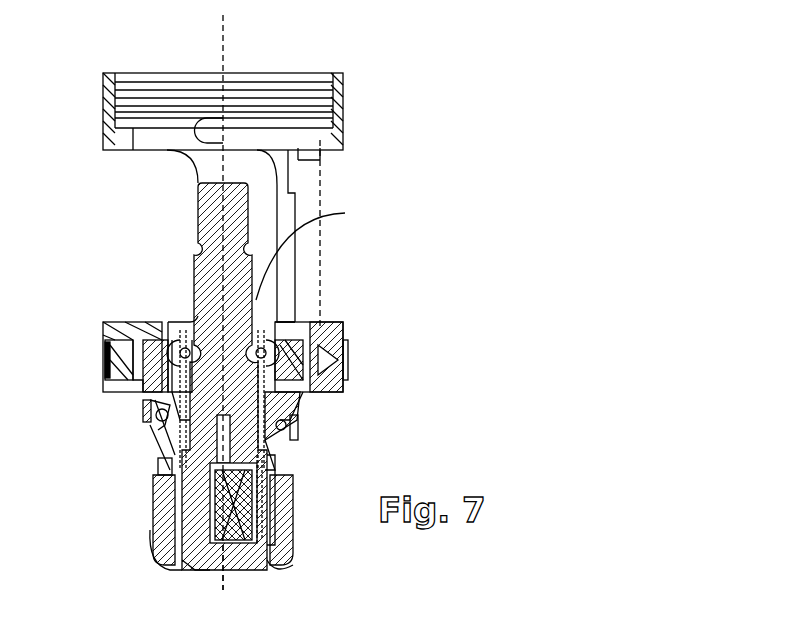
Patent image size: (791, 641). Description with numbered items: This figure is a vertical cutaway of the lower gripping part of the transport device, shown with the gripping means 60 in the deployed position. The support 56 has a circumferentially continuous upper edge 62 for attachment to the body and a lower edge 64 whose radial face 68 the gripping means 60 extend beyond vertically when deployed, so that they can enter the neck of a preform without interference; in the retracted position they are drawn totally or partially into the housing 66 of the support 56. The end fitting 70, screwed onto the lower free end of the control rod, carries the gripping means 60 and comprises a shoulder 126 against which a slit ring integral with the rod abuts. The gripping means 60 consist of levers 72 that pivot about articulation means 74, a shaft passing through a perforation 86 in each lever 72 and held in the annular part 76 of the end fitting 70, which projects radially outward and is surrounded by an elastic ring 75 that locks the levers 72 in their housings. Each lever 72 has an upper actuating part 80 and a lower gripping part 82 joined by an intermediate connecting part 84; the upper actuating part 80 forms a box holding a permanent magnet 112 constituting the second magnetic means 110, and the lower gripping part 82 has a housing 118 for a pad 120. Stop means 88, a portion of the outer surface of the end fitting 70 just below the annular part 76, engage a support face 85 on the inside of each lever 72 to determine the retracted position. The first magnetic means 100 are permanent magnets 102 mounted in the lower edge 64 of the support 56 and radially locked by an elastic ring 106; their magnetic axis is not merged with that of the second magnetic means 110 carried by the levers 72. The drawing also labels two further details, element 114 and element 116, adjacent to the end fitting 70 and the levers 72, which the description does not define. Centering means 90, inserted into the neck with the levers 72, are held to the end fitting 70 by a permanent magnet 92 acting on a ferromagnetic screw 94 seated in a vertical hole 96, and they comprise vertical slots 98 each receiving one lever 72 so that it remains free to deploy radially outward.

The support 56 is at (320, 249).
The gripping means 60 is at (103, 234).
The upper edge 62 is at (345, 82).
The lower edge 64 is at (103, 328).
The housing 66 is at (265, 182).
The radial face 68 is at (140, 402).
The end fitting 70 is at (209, 232).
The lever 72 is at (286, 406).
The articulation means 74 is at (172, 458).
The elastic ring 75 is at (307, 428).
The annular part 76 is at (278, 452).
The upper actuating part 80 is at (182, 332).
The lower gripping part 82 is at (173, 520).
The intermediate connecting part 84 is at (170, 470).
The support face 85 is at (270, 477).
The perforation 86 is at (158, 425).
The stop means 88 is at (282, 513).
The centering means 90 is at (192, 564).
The permanent magnet 92 is at (233, 566).
The screw 94 is at (173, 563).
The hole 96 is at (272, 467).
The vertical slots 98 is at (263, 575).
The first magnetic means 100 is at (348, 365).
The permanent magnets 102 is at (122, 394).
The elastic ring 106 is at (348, 344).
The second magnetic means 110 is at (303, 336).
The permanent magnets 112 is at (146, 420).
The ball 114 is at (185, 346).
The seal ring 116 is at (167, 338).
The housing 118 is at (287, 570).
The pads 120 is at (175, 506).
The shoulder 126 is at (316, 252).